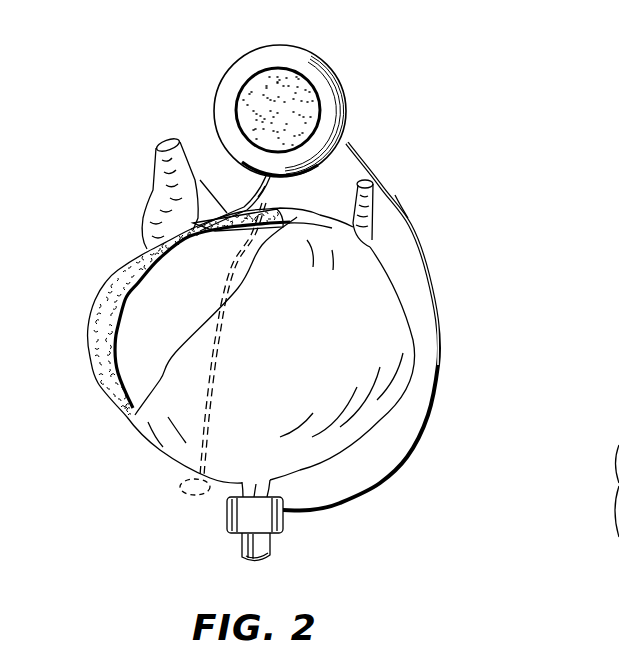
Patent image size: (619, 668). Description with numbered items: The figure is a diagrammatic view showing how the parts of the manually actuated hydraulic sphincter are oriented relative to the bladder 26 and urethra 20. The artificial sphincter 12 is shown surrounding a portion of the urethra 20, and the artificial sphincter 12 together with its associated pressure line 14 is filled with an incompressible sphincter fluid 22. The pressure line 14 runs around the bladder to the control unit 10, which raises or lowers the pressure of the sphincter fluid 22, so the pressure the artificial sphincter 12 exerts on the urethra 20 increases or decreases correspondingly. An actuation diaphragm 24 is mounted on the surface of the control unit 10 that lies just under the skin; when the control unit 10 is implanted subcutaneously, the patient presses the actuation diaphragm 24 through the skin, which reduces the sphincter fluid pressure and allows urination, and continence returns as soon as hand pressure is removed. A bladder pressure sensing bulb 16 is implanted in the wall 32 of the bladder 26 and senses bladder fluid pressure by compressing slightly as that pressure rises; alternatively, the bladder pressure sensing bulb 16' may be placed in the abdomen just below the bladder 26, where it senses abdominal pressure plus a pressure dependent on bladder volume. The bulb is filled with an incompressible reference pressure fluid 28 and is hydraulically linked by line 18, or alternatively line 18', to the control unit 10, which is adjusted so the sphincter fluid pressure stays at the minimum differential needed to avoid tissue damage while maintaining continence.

The control unit 10 is at (328, 67).
The actuation diaphragm 24 is at (267, 78).
The pressure line 14 is at (423, 252).
The sphincter fluid 22 is at (407, 218).
The bladder 26 is at (152, 447).
The wall of the bladder 32 is at (120, 278).
The bladder pressure sensing bulb 16 is at (233, 241).
The line 18 is at (250, 203).
The reference pressure fluid 28 is at (258, 197).
The line 18' is at (233, 340).
The bladder pressure sensing bulb 16' is at (189, 500).
The artificial sphincter 12 is at (225, 510).
The urethra 20 is at (270, 550).